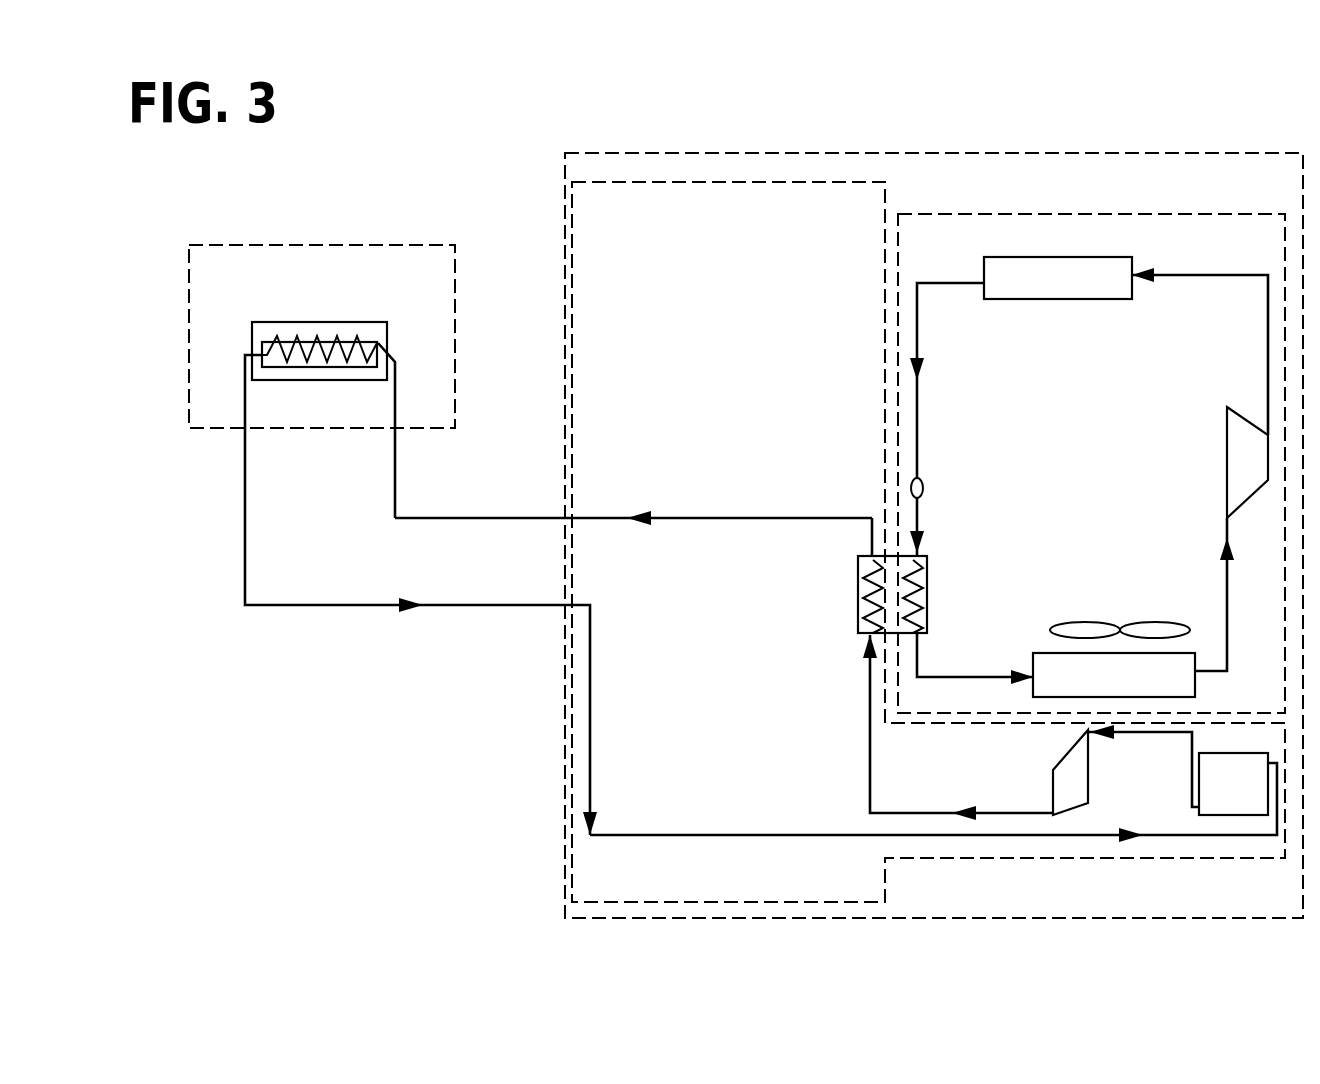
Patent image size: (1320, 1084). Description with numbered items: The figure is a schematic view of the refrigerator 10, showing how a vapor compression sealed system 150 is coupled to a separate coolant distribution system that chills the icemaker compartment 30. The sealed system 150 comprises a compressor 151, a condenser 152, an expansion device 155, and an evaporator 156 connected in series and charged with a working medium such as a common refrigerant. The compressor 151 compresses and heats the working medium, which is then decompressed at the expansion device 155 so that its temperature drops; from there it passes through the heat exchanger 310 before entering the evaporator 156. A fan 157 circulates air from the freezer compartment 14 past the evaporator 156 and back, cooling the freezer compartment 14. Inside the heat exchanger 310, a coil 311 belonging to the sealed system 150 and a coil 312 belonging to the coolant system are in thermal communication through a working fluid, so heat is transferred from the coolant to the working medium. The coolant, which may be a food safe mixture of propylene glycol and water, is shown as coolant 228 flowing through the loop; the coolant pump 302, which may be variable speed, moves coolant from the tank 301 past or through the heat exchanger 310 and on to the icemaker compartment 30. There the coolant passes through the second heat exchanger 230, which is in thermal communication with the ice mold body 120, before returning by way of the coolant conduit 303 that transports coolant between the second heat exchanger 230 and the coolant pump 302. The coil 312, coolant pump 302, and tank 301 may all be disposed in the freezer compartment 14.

The refrigerator 10 is at (405, 184).
The freezer compartment 14 is at (855, 222).
The icemaker compartment 30 is at (419, 285).
The ice mold body 120 is at (310, 381).
The second heat exchanger 230 is at (302, 337).
The sealed system 150 is at (1272, 255).
The compressor 151 is at (1226, 485).
The condenser 152 is at (1034, 292).
The expansion device 155 is at (924, 490).
The evaporator 156 is at (1089, 690).
The fan 157 is at (1120, 628).
The coolant 228 is at (637, 512).
The tank 301 is at (1209, 797).
The coolant pump 302 is at (1066, 759).
The coolant conduit 303 is at (757, 517).
The heat exchanger 310 is at (927, 583).
The coil 311 is at (925, 600).
The coil 312 is at (858, 600).